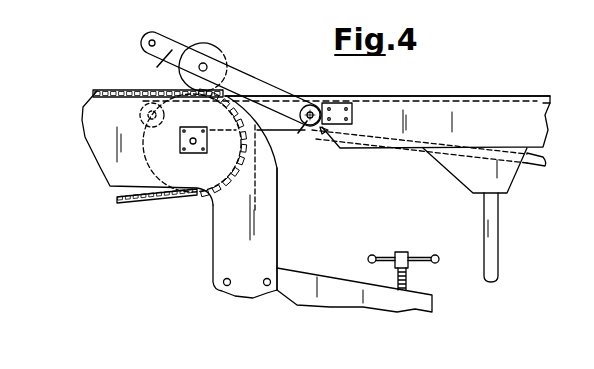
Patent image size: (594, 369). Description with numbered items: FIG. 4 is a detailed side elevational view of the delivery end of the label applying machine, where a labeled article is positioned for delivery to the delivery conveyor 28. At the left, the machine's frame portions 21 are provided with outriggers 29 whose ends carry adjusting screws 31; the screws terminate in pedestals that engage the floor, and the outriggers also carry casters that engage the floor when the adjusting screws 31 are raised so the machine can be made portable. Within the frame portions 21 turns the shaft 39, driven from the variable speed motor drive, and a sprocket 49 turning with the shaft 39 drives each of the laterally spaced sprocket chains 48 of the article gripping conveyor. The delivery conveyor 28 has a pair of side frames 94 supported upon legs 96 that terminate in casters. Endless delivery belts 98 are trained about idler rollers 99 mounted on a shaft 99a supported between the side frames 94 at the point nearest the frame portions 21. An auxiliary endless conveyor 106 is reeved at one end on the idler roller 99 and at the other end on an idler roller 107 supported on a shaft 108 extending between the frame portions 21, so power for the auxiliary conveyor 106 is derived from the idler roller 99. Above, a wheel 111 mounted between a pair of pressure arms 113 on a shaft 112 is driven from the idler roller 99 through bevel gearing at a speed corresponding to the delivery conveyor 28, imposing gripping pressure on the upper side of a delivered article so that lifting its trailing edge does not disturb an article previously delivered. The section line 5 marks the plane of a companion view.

The section line 5- 5 is at (226, 100).
The frame portions 21 is at (277, 227).
The delivery conveyor 28 is at (449, 90).
The outriggers 29 is at (338, 283).
The adjusting screws 31 is at (437, 256).
The shaft 39 is at (193, 144).
The sprocket chains 48 is at (147, 202).
The sprocket 49 is at (152, 178).
The side frames 94 is at (500, 128).
The legs 96 is at (498, 242).
The endless delivery belts 98 is at (490, 95).
The idler rollers 99 is at (312, 127).
The shaft 99a is at (318, 104).
The auxiliary endless conveyor 106 is at (257, 197).
The idler roller 107 is at (140, 114).
The shaft 108 is at (165, 114).
The wheel 111 is at (213, 53).
The shaft 112 is at (210, 66).
The pressure arms 113 is at (275, 84).